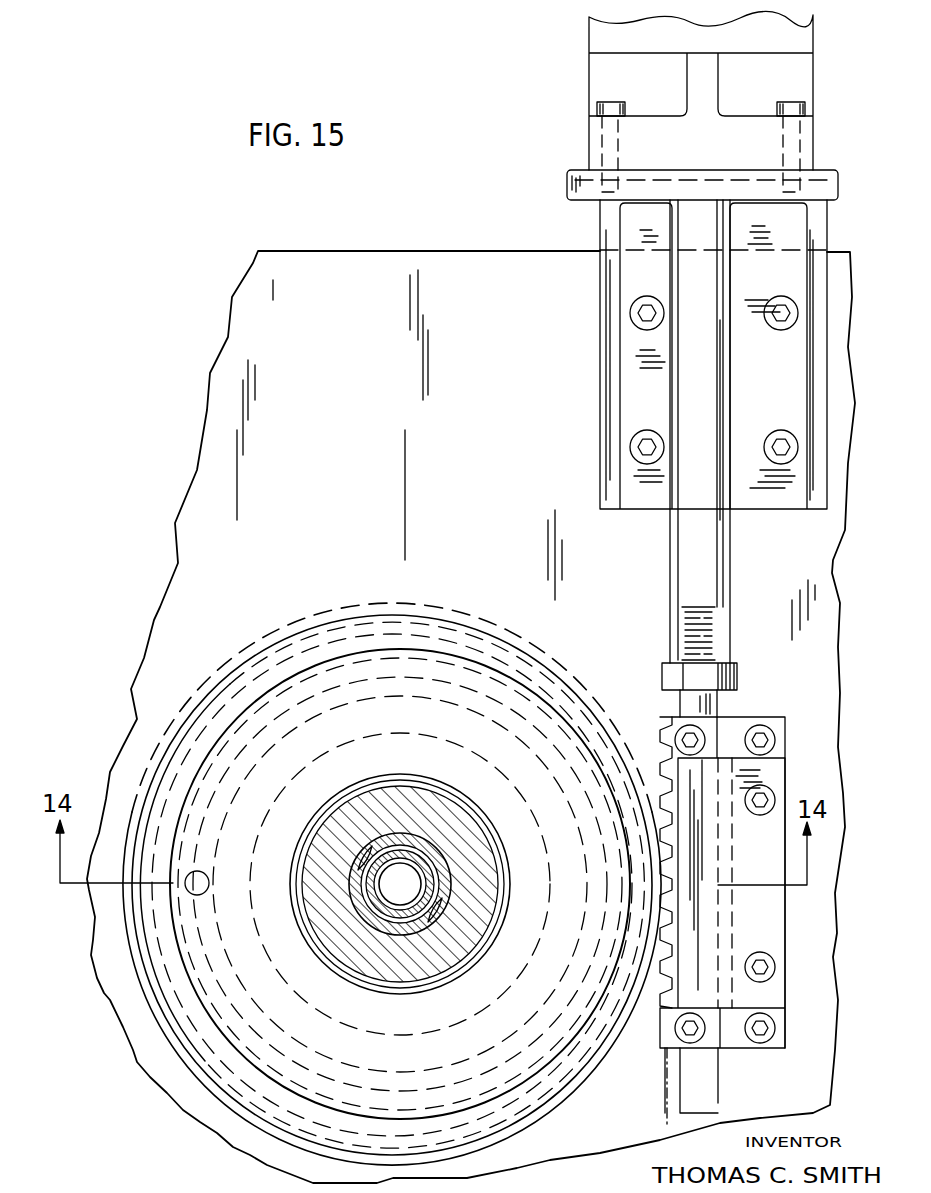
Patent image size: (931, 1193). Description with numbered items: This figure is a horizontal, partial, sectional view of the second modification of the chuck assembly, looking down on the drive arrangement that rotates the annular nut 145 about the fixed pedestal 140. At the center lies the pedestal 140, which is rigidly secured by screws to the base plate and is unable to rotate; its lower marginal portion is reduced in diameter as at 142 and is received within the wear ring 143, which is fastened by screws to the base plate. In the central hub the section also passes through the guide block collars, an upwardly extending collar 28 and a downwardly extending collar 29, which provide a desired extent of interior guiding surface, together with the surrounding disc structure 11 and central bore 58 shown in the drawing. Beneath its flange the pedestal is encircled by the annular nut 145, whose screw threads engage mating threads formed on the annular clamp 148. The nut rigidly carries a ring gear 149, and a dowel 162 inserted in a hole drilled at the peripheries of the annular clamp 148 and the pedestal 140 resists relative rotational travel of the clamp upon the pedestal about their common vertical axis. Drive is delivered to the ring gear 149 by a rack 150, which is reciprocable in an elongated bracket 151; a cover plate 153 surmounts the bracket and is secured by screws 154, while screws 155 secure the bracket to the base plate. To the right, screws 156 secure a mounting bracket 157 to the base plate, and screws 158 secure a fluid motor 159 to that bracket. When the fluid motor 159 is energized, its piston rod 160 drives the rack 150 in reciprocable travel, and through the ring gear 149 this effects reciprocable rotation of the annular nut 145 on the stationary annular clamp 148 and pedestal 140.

The disc hub 11 is at (498, 896).
The upwardly extending collar 28 is at (432, 848).
The downwardly extending collar 29 is at (437, 892).
The shaft bore 58 is at (418, 916).
The pedestal 140 is at (207, 812).
The reduced-diameter lower marginal portion 142 is at (344, 712).
The wear ring 143 is at (278, 664).
The annular nut 145 is at (478, 632).
The annular clamp 148 is at (517, 683).
The ring gear 149 is at (216, 680).
The rack 150 is at (677, 1108).
The elongated bracket 151 is at (785, 988).
The cover plate 153 is at (775, 930).
The screws 154 is at (775, 966).
The screws 155 is at (762, 1043).
The screws 156 is at (630, 316).
The mounting bracket 157 is at (790, 407).
The screws 158 is at (600, 104).
The fluid motor 159 is at (736, 44).
The piston rod 160 is at (731, 568).
The dowel 162 is at (206, 893).